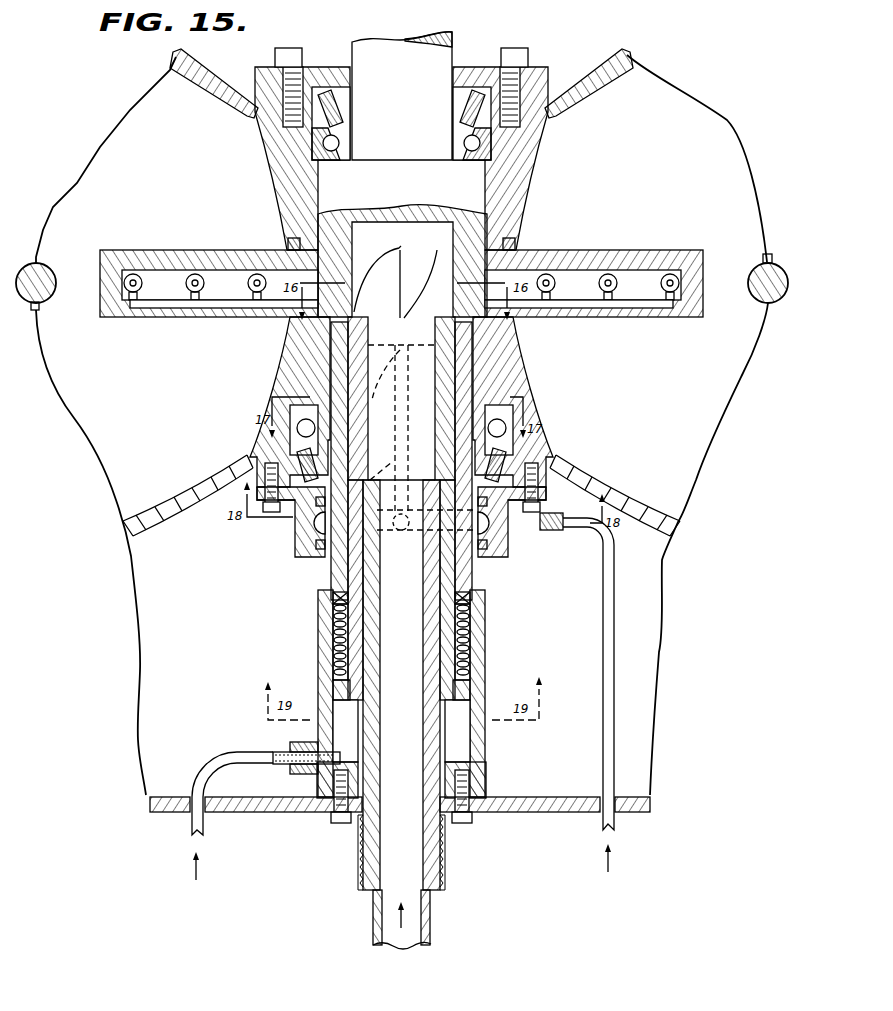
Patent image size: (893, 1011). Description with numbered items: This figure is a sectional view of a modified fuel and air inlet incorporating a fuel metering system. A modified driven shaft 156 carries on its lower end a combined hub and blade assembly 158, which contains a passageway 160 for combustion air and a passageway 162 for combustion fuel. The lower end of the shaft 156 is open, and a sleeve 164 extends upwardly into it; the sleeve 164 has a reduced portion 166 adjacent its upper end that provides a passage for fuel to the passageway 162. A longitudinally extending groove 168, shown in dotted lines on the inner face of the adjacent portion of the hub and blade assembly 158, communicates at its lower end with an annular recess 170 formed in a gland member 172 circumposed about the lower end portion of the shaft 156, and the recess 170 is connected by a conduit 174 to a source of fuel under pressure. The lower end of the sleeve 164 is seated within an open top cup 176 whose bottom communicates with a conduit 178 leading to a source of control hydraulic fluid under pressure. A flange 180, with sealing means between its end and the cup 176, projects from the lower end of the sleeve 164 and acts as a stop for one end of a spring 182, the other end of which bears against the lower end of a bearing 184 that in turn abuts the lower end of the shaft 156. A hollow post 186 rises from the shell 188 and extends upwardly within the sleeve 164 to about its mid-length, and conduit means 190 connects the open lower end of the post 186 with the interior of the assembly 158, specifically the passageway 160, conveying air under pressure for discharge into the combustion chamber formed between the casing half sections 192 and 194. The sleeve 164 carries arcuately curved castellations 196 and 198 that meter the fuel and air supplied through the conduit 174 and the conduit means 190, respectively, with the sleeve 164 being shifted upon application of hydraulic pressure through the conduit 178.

The driven shaft 156 is at (442, 91).
The combined hub and blade assembly 158 is at (559, 245).
The passageway 160 is at (628, 277).
The passageway 162 is at (633, 318).
The sleeve 164 is at (347, 553).
The reduced portion 166 is at (350, 372).
The longitudinally extending groove 168 is at (297, 527).
The annular recess 170 is at (490, 545).
The gland member 172 is at (490, 575).
The conduit 174 is at (613, 654).
The open top cup 176 is at (320, 657).
The conduit 178 is at (223, 768).
The flange 180 is at (468, 690).
The spring 182 is at (465, 652).
The bearing 184 is at (328, 603).
The hollow post 186 is at (440, 813).
The shell 188 is at (530, 812).
The conduit means 190 is at (430, 915).
The casing half section 192 is at (576, 97).
The casing half section 194 is at (612, 484).
The arcuately curved castellations 196 is at (372, 400).
The arcuately curved castellations 198 is at (401, 253).